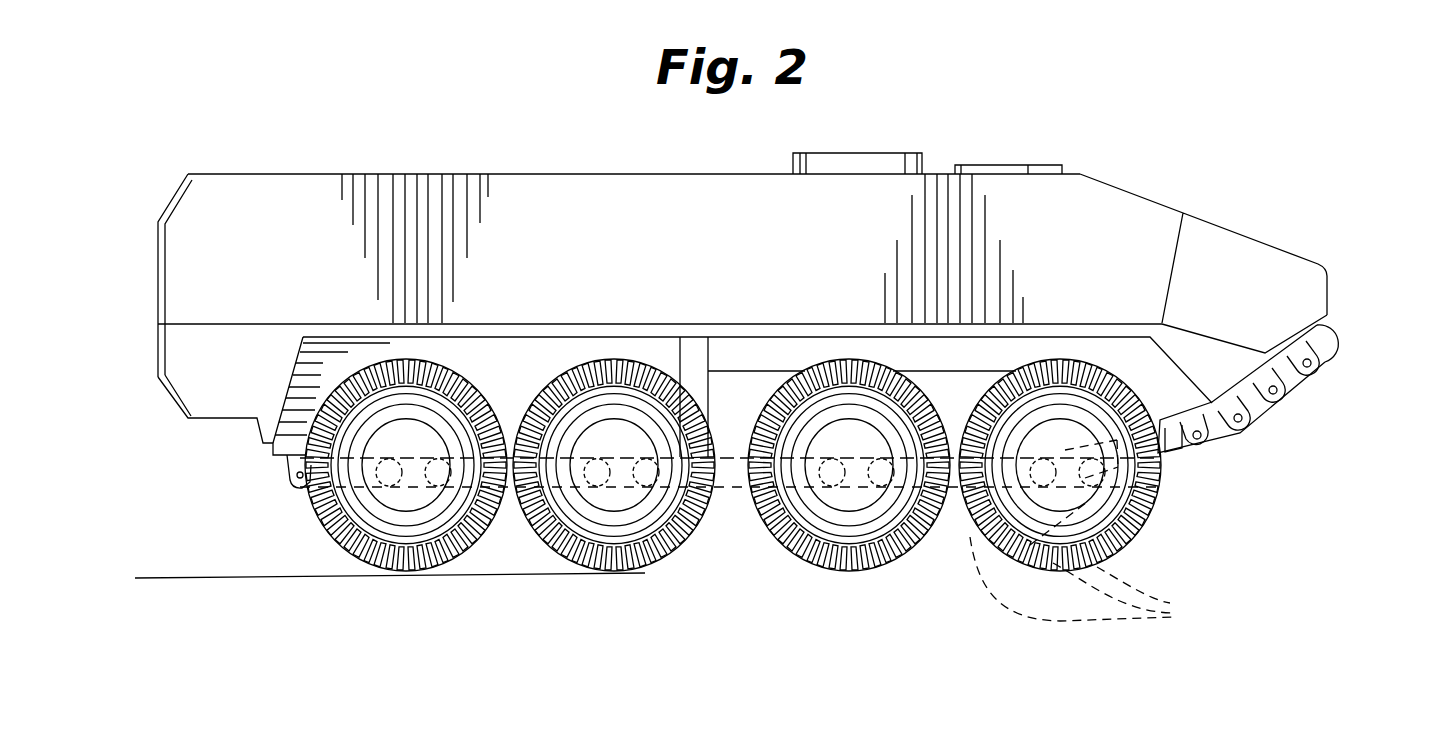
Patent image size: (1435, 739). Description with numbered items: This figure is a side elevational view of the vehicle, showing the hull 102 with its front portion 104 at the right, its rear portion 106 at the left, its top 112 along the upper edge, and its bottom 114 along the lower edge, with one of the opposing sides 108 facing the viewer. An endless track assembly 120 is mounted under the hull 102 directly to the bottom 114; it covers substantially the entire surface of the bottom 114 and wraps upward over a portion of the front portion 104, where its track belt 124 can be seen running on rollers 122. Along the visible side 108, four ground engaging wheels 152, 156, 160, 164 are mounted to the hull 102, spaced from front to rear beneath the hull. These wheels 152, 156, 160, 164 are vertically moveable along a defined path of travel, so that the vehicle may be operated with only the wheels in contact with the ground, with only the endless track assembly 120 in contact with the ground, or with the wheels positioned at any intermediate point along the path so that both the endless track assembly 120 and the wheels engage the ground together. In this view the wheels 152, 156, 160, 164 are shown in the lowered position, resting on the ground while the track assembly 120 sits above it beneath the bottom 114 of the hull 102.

The hull 102 is at (1133, 195).
The front portion 104 is at (1327, 322).
The rear portion 106 is at (157, 350).
The side 108 is at (213, 375).
The top 112 is at (573, 173).
The bottom 114 is at (287, 455).
The endless track assembly 120 is at (1320, 346).
The rollers 122 is at (1094, 532).
The track belt 124 is at (1285, 408).
The wheel 152 is at (1153, 503).
The wheel 156 is at (900, 557).
The wheel 160 is at (663, 560).
The wheel 164 is at (422, 577).